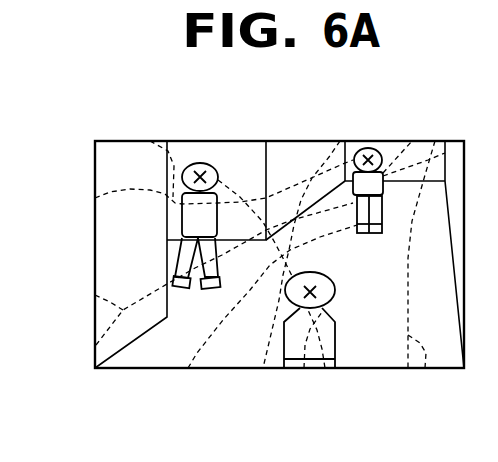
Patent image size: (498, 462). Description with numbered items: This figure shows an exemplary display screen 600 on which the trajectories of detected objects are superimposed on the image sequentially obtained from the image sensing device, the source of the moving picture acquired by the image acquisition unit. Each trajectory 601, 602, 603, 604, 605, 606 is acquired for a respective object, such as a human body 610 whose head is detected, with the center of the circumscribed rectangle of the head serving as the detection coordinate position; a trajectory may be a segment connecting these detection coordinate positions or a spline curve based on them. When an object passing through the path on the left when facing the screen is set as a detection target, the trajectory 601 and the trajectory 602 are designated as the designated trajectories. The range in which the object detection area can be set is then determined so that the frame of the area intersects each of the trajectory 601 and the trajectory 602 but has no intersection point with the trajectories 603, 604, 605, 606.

The captured image 600 is at (258, 141).
The trajectory 601 is at (150, 141).
The trajectory 602 is at (95, 198).
The trajectory 603 is at (95, 295).
The trajectory 604 is at (188, 368).
The trajectory 605 is at (303, 368).
The trajectory 606 is at (423, 368).
The person 610 is at (200, 162).